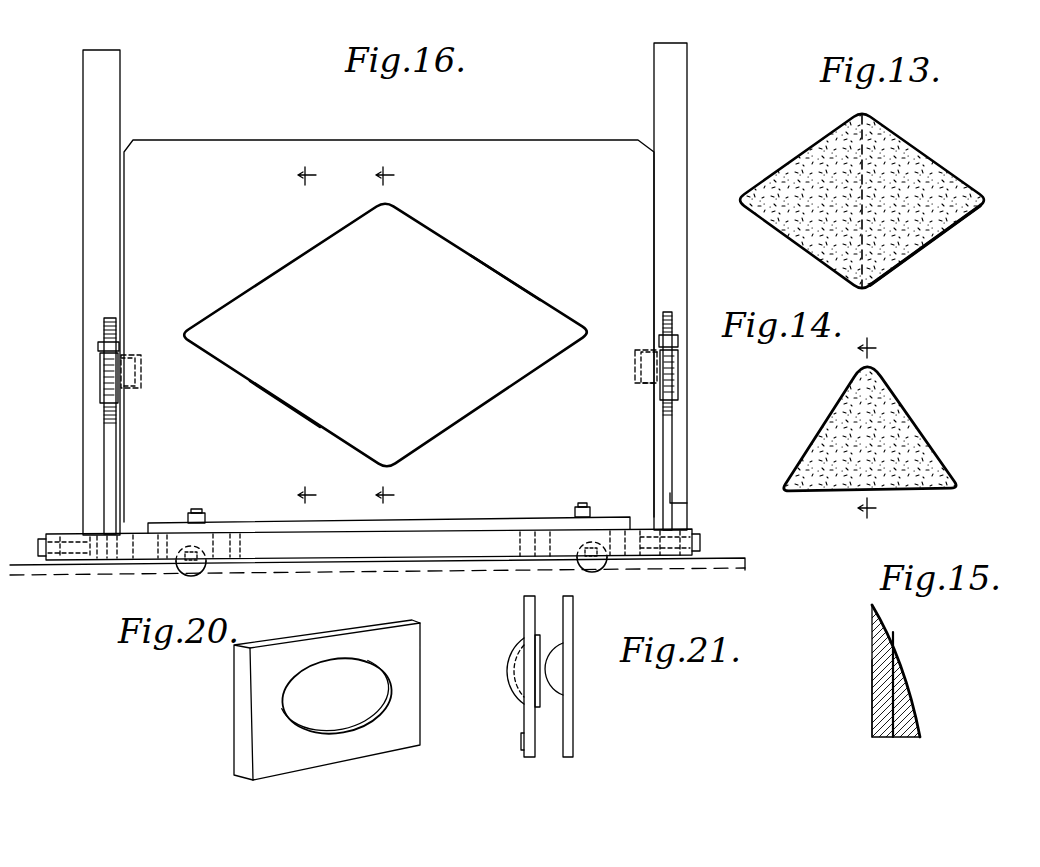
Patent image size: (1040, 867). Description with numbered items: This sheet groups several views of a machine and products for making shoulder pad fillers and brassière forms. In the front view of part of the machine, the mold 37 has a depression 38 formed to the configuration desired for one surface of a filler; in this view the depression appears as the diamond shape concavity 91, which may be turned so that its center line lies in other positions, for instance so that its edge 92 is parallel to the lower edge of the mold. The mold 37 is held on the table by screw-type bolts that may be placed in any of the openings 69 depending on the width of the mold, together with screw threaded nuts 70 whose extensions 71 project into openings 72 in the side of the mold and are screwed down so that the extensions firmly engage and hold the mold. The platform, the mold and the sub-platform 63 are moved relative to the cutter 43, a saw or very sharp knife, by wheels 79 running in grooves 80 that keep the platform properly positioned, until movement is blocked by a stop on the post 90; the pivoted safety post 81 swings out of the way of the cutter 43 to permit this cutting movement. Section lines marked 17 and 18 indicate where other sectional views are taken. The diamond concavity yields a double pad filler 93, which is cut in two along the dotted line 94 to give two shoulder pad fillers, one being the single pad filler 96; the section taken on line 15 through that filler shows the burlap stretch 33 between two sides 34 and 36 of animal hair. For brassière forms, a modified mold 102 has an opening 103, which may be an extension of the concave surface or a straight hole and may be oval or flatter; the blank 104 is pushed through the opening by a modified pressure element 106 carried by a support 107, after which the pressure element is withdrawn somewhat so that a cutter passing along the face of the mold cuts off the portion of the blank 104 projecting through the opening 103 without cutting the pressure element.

In FIG. 14, the section line 15 is at (855, 428).
In FIG. 16, the section line 17 is at (293, 335).
In FIG. 16, the section line 18 is at (372, 335).
In FIG. 15, the burlap stretch 33 is at (910, 692).
In FIG. 15, the side of animal hair 34 is at (871, 704).
In FIG. 15, the side of animal hair 36 is at (918, 718).
In FIG. 16, the mold 37 is at (207, 145).
In FIG. 16, the depression 38 is at (443, 355).
In FIG. 21, the cutter 43 is at (523, 752).
In FIG. 16, the sub-platform 63 is at (112, 483).
In FIG. 16, the openings 69 is at (95, 535).
In FIG. 16, the screw threaded nuts 70 is at (100, 380).
In FIG. 16, the extensions 71 is at (127, 372).
In FIG. 16, the openings 72 is at (141, 371).
In FIG. 16, the wheels 79 is at (590, 571).
In FIG. 16, the grooves 80 is at (707, 573).
In FIG. 16, the safety post 81 is at (679, 290).
In FIG. 16, the post 90 is at (98, 273).
In FIG. 16, the diamond shape concavity 91 is at (515, 292).
In FIG. 16, the edge 92 is at (305, 415).
In FIG. 13, the double pad filler 93 is at (915, 160).
In FIG. 13, the dotted line 94 is at (855, 138).
In FIG. 14, the shoulder pad filler 96 is at (900, 412).
In FIG. 20, the modified mold 102 is at (397, 630).
In FIG. 21, the modified mold 102 is at (527, 620).
In FIG. 20, the opening 103 is at (345, 715).
In FIG. 21, the blank 104 is at (513, 696).
In FIG. 21, the pressure element 106 is at (556, 672).
In FIG. 21, the support 107 is at (566, 706).